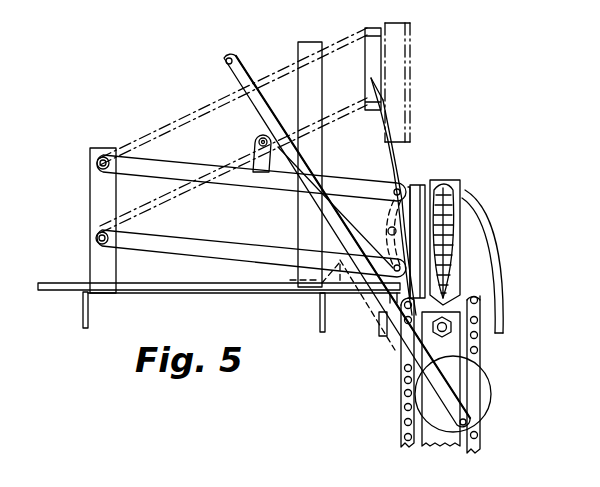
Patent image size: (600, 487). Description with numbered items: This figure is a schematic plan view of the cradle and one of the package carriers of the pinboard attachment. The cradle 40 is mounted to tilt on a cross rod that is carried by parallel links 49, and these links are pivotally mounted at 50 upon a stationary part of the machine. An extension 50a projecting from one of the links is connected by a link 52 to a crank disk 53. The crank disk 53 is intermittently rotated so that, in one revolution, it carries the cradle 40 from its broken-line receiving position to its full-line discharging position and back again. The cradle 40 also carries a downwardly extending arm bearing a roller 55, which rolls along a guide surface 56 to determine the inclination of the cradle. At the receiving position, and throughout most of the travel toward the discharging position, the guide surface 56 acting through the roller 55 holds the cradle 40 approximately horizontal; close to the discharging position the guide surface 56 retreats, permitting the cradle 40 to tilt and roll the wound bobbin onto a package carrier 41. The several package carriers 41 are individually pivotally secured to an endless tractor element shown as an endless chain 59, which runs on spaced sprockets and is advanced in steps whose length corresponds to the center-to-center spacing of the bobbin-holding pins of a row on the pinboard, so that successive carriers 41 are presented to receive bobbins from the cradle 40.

The cradle 40 is at (398, 67).
The package carrier 41 is at (459, 186).
The parallel links 49 is at (256, 182).
The pivot 50 is at (95, 165).
The extension 50a is at (256, 152).
The link 52 is at (312, 203).
The crank disk 53 is at (462, 385).
The roller 55 is at (388, 231).
The guide surface 56 is at (398, 172).
The endless chain 59 is at (485, 347).